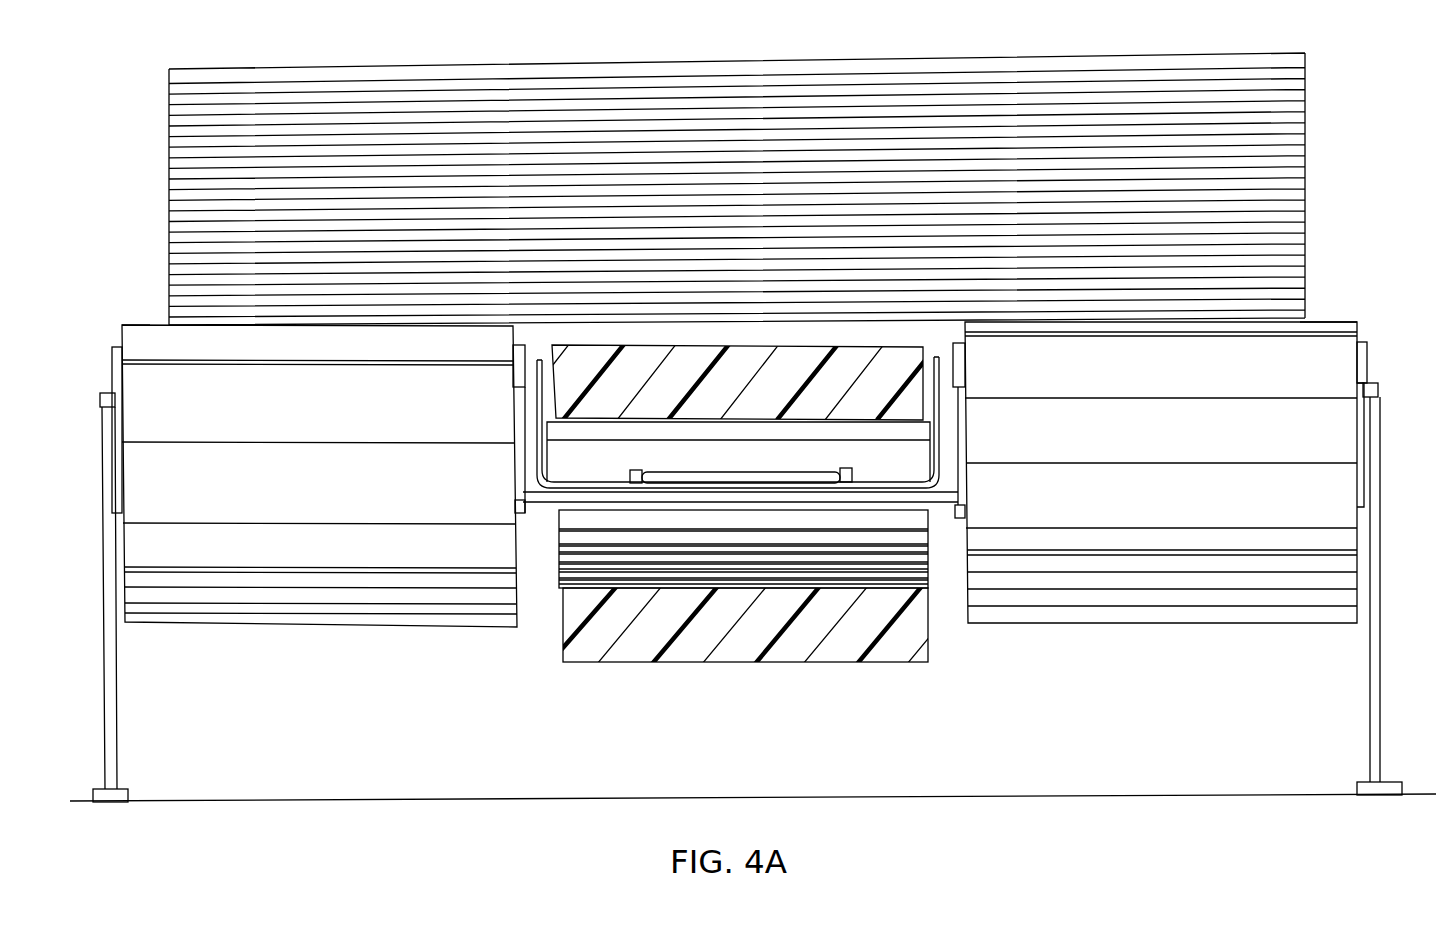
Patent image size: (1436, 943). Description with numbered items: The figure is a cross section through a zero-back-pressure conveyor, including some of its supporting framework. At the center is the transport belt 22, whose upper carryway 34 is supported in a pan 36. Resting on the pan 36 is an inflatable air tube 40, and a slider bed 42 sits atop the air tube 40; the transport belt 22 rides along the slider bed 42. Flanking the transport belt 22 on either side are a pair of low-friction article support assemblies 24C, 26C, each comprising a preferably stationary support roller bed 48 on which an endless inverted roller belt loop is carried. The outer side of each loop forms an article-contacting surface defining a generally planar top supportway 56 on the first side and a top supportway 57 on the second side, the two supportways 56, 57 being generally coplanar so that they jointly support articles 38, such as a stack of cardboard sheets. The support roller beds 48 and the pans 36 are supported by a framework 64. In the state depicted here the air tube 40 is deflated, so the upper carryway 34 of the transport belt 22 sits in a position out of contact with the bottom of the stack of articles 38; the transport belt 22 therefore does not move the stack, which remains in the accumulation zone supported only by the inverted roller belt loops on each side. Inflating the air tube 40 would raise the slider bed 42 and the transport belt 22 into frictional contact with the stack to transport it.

The articles 38 is at (1100, 61).
The top supportway 57 is at (145, 325).
The top supportway 56 is at (1325, 320).
The support roller bed 48 is at (1367, 362).
The low-friction article support assembly 24C is at (1343, 518).
The low-friction article support assembly 26C is at (423, 605).
The framework 64 is at (113, 673).
The upper carryway 34 is at (660, 345).
The transport belt 22 is at (851, 357).
The pan 36 is at (556, 494).
The inflatable air tube 40 is at (672, 476).
The slider bed 42 is at (855, 458).